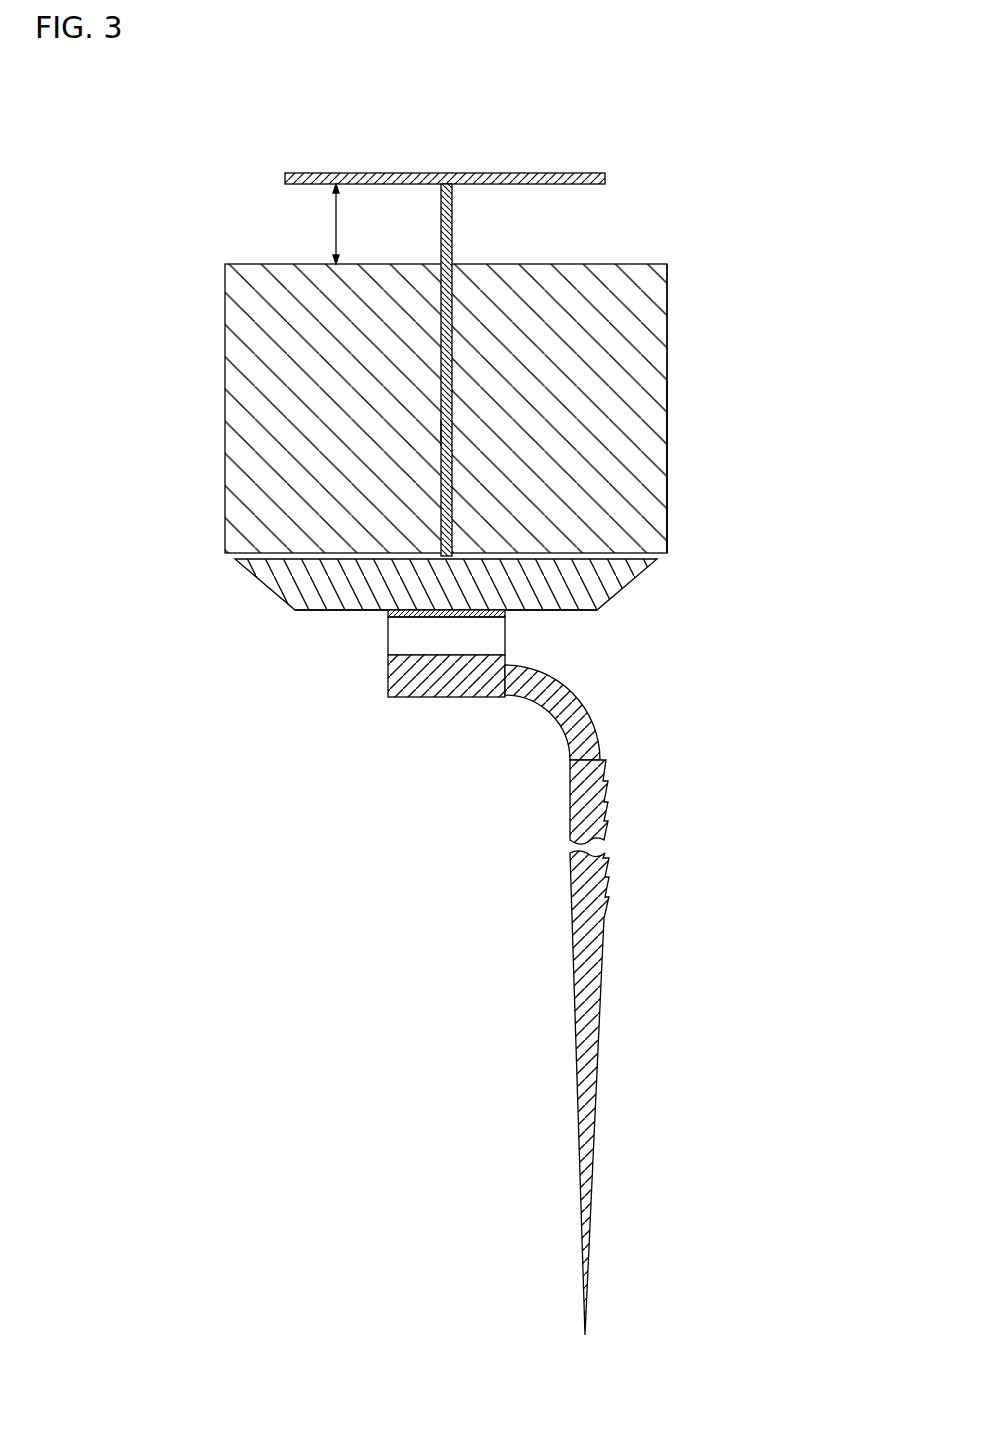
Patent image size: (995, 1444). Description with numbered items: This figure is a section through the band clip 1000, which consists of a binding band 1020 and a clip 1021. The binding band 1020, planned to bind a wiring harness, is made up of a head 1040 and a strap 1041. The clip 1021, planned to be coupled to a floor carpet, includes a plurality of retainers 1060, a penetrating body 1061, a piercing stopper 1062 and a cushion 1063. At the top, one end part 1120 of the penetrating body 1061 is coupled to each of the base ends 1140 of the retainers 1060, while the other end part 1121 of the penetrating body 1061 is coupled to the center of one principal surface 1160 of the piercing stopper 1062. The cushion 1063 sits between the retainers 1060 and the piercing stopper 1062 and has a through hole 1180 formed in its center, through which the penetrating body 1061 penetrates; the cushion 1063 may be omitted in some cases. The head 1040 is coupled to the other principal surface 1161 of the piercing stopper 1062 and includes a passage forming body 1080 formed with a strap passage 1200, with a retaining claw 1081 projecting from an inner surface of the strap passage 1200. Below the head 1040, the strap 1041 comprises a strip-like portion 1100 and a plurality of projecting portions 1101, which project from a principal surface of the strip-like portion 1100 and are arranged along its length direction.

The band clip 1000 is at (700, 132).
The binding band 1020 is at (210, 665).
The clip 1021 is at (788, 255).
The head 1040 is at (280, 648).
The strap 1041 is at (280, 776).
The retainers 1060 is at (368, 170).
The penetrating body 1061 is at (667, 297).
The piercing stopper 1062 is at (645, 576).
The cushion 1063 is at (667, 393).
The passage forming body 1080 is at (388, 680).
The retaining claw 1081 is at (502, 617).
The strip-like portion 1100 is at (570, 813).
The projecting portions 1101 is at (590, 958).
The one end part of the penetrating body 1120 is at (447, 173).
The other end part of the penetrating body 1121 is at (450, 563).
The base ends of the retainers 1140 is at (441, 198).
The one principal surface of the piercing stopper 1160 is at (546, 553).
The other principal surface of the piercing stopper 1161 is at (585, 610).
The through hole 1180 is at (441, 433).
The strap passage 1200 is at (492, 652).